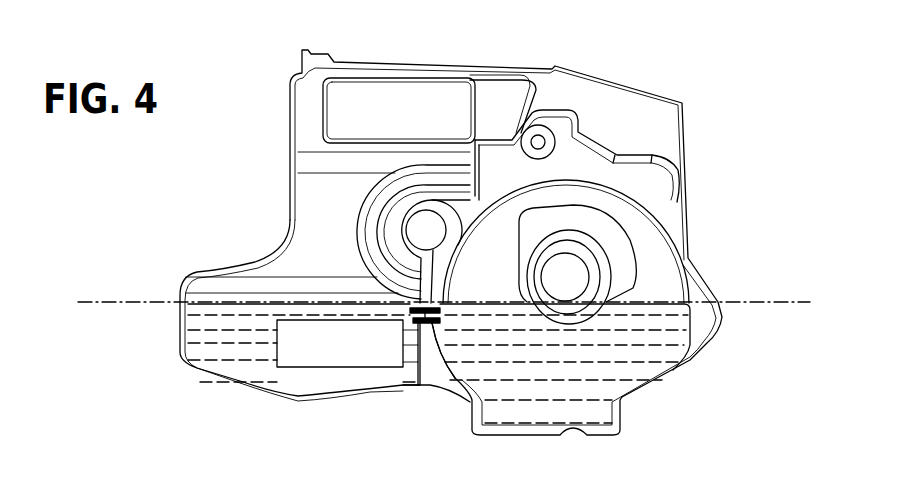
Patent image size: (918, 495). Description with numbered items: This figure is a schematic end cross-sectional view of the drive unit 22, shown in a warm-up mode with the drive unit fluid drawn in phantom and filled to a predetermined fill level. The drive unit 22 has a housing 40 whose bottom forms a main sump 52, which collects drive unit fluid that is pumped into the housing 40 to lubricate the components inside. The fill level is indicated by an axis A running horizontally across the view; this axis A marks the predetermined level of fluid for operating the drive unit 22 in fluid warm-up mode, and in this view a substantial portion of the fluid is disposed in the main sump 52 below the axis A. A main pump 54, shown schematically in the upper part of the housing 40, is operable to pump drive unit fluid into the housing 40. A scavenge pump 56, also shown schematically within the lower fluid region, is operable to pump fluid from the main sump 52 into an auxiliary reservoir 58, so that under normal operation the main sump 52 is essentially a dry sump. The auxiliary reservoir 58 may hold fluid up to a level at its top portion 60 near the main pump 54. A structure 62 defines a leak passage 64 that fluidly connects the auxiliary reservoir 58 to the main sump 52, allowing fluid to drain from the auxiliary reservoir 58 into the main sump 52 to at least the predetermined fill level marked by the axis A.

The drive unit 22 is at (645, 60).
The housing 40 is at (662, 135).
The main sump 52 is at (640, 368).
The main pump 54 is at (393, 98).
The scavenge pump 56 is at (352, 353).
The auxiliary reservoir 58 is at (231, 351).
The top portion 60 is at (307, 94).
The structure 62 is at (425, 298).
The leak passage 64 is at (418, 383).
The axis A is at (768, 302).